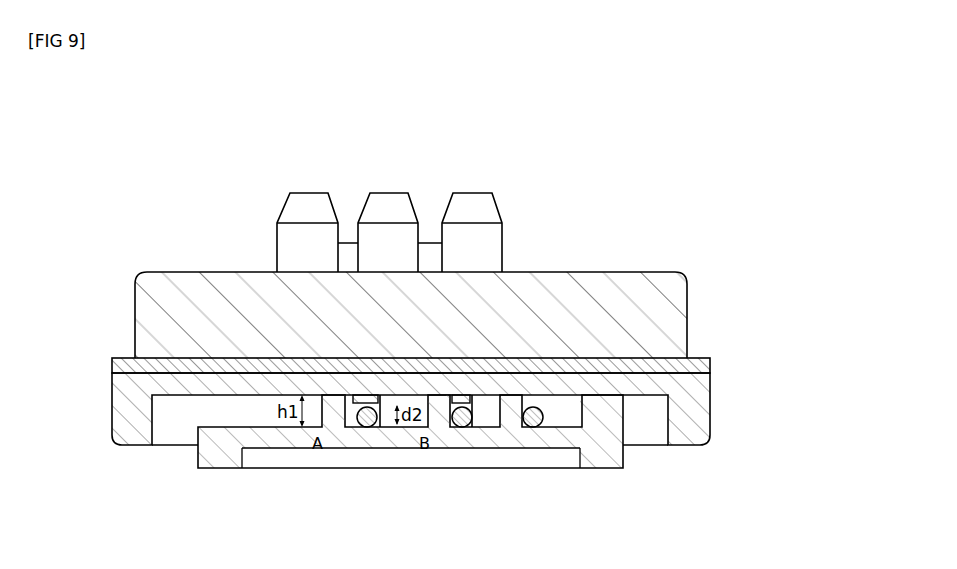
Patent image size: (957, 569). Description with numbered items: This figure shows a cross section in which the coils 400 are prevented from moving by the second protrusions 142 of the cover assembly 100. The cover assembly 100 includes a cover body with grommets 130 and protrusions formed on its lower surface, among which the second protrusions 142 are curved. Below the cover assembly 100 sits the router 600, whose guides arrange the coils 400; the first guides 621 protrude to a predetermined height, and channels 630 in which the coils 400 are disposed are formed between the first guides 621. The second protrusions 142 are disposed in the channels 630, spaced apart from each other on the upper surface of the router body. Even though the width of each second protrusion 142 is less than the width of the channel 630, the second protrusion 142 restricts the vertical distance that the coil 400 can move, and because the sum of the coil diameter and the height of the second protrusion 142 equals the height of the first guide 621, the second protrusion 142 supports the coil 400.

The cover assembly 100 is at (712, 304).
The grommets 130 is at (474, 197).
The second protrusions 142 is at (362, 400).
The coils 400 is at (362, 428).
The router 600 is at (643, 458).
The first guides 621 is at (333, 418).
The channels 630 is at (426, 397).